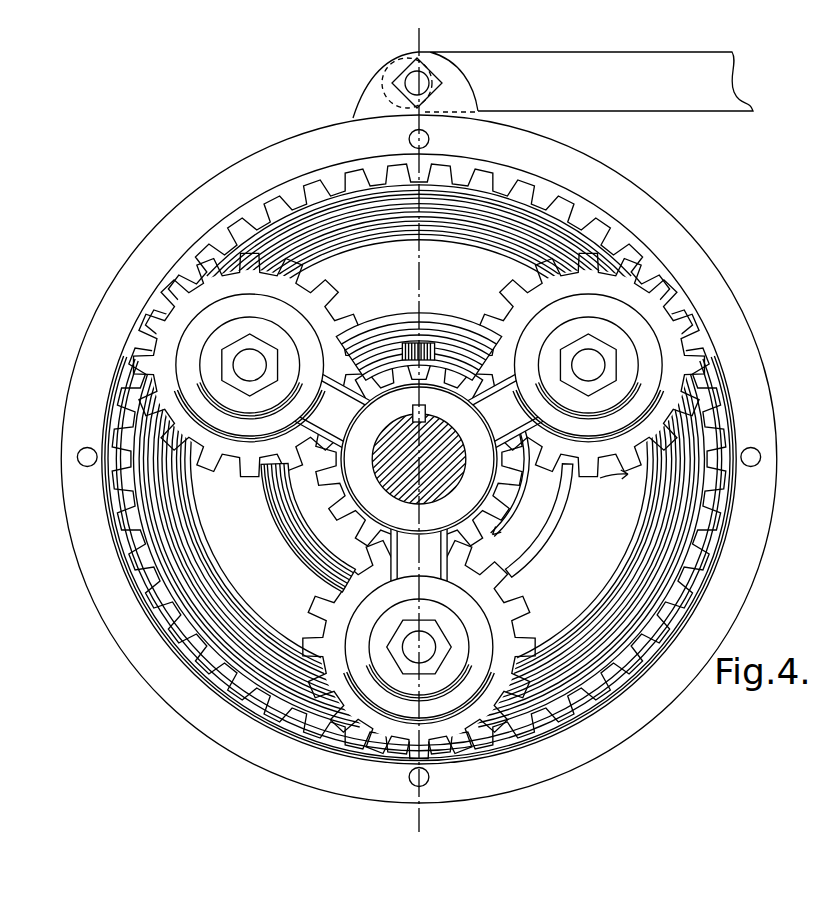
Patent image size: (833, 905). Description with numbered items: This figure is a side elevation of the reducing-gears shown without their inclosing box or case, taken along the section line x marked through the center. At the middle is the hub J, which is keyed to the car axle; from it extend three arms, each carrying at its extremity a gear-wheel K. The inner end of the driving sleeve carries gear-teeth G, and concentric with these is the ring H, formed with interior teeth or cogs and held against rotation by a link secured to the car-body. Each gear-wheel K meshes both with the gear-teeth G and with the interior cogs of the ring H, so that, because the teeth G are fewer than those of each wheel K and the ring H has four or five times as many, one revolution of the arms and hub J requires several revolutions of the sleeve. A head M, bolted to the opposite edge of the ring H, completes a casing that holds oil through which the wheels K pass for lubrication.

The ring H is at (722, 398).
The gear-wheel K is at (418, 509).
The hub J is at (419, 480).
The gear-teeth G is at (345, 506).
The head M is at (559, 498).
The section line x is at (415, 428).